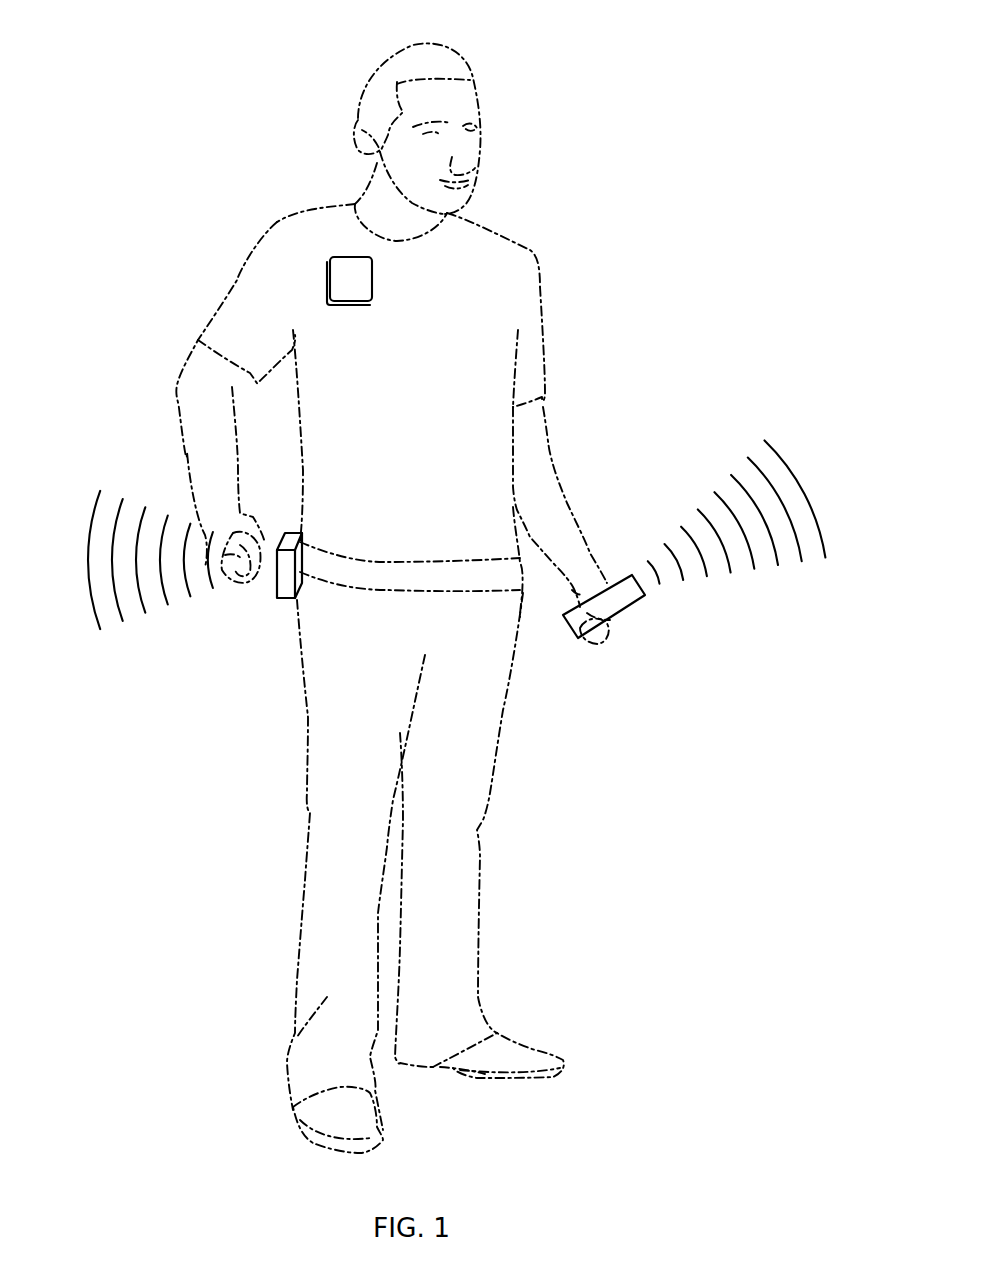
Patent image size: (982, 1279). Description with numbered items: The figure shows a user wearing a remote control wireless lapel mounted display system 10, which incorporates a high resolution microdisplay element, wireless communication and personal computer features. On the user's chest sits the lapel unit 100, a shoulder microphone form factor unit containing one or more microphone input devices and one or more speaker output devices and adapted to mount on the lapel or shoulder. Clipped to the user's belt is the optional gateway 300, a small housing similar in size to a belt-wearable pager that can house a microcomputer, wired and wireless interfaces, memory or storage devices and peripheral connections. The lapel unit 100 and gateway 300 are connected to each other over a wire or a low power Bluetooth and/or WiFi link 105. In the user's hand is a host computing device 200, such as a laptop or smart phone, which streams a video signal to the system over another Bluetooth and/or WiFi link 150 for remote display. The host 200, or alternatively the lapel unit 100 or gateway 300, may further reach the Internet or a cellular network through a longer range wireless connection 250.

The remote control wireless lapel mounted display system 10 is at (594, 74).
The lapel unit 100 is at (343, 268).
The Bluetooth and/or WiFi link 105 is at (145, 268).
The Bluetooth and/or WiFi link 150 is at (246, 689).
The host computing device 200 is at (633, 605).
The longer range wireless connection 250 is at (709, 427).
The gateway 300 is at (277, 587).